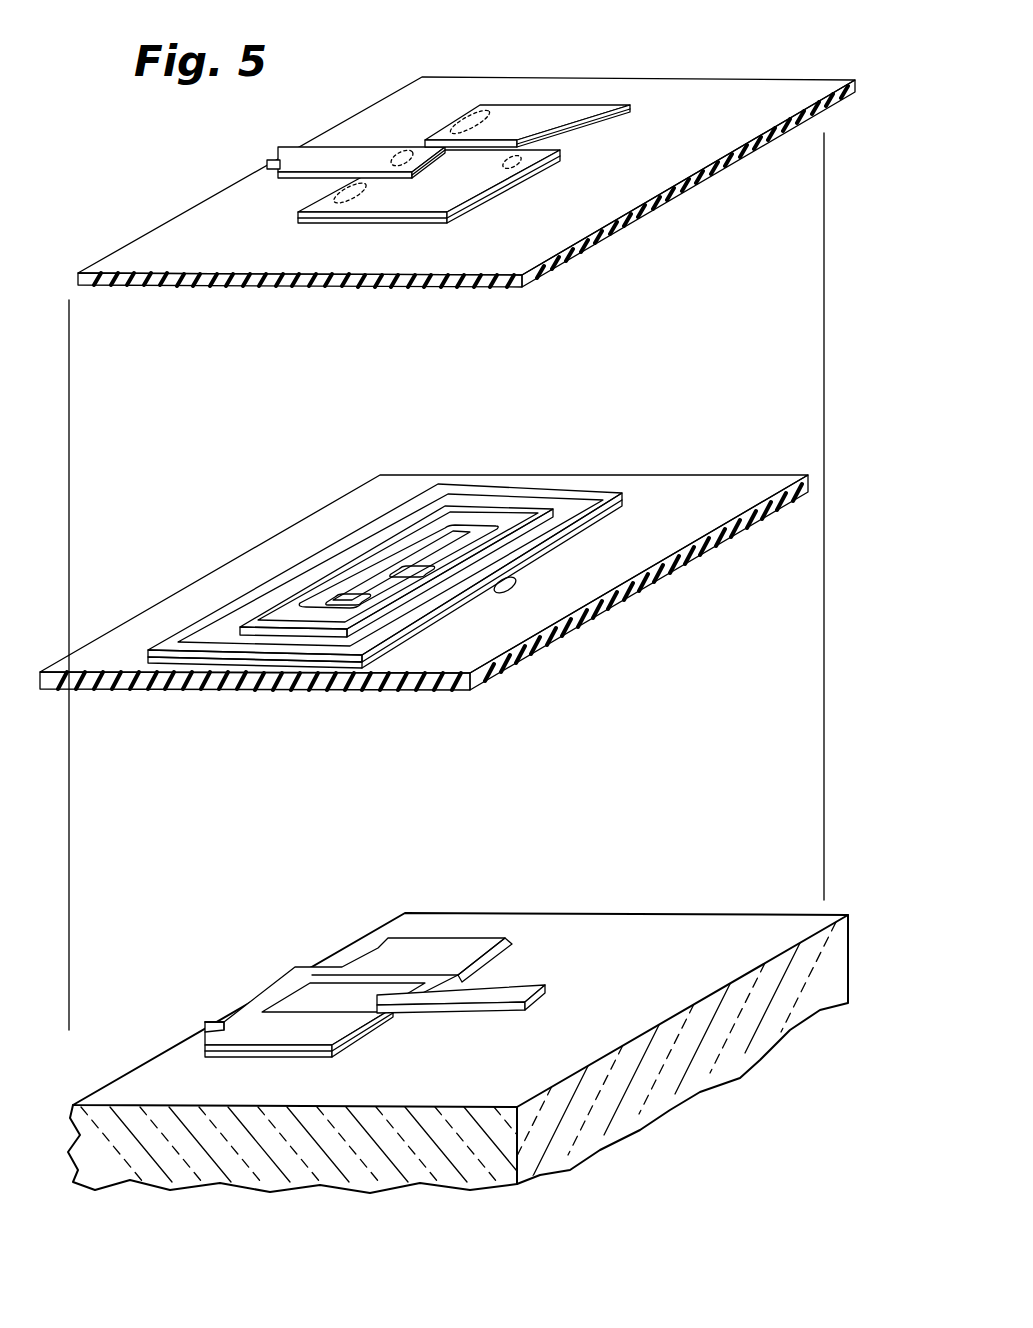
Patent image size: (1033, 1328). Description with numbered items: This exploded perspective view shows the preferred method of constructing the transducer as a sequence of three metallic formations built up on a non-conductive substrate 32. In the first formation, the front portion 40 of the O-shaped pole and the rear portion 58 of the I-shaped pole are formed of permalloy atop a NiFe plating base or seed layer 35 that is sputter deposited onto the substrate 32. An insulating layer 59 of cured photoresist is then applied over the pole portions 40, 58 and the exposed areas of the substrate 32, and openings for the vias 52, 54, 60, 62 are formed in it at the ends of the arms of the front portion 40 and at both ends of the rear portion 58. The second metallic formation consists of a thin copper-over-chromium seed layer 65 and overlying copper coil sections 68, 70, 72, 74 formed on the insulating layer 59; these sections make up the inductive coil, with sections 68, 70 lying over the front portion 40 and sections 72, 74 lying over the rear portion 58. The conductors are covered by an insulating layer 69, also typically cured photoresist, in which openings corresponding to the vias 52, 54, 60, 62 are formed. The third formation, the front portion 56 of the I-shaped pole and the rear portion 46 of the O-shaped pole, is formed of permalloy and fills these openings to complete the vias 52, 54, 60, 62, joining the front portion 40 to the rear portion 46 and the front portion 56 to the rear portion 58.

The non-conductive substrate 32 is at (100, 1146).
The NiFe plating base or seed layer 35 is at (217, 1060).
The front portion of O-shaped pole 40 is at (290, 978).
The rear portion of O-shaped pole 46 is at (452, 125).
The via 52 is at (343, 193).
The via 54 is at (478, 122).
The front portion of I-shaped pole 56 is at (300, 158).
The rear portion of I-shaped pole 58 is at (513, 990).
The insulating layer 59 is at (100, 684).
The via 60 is at (515, 162).
The via 62 is at (403, 157).
The seed layer 65 is at (147, 663).
The conductive section 68 is at (340, 540).
The insulating layer 69 is at (85, 275).
The conductive section 70 is at (413, 527).
The conductive section 72 is at (427, 573).
The conductive section 74 is at (517, 550).